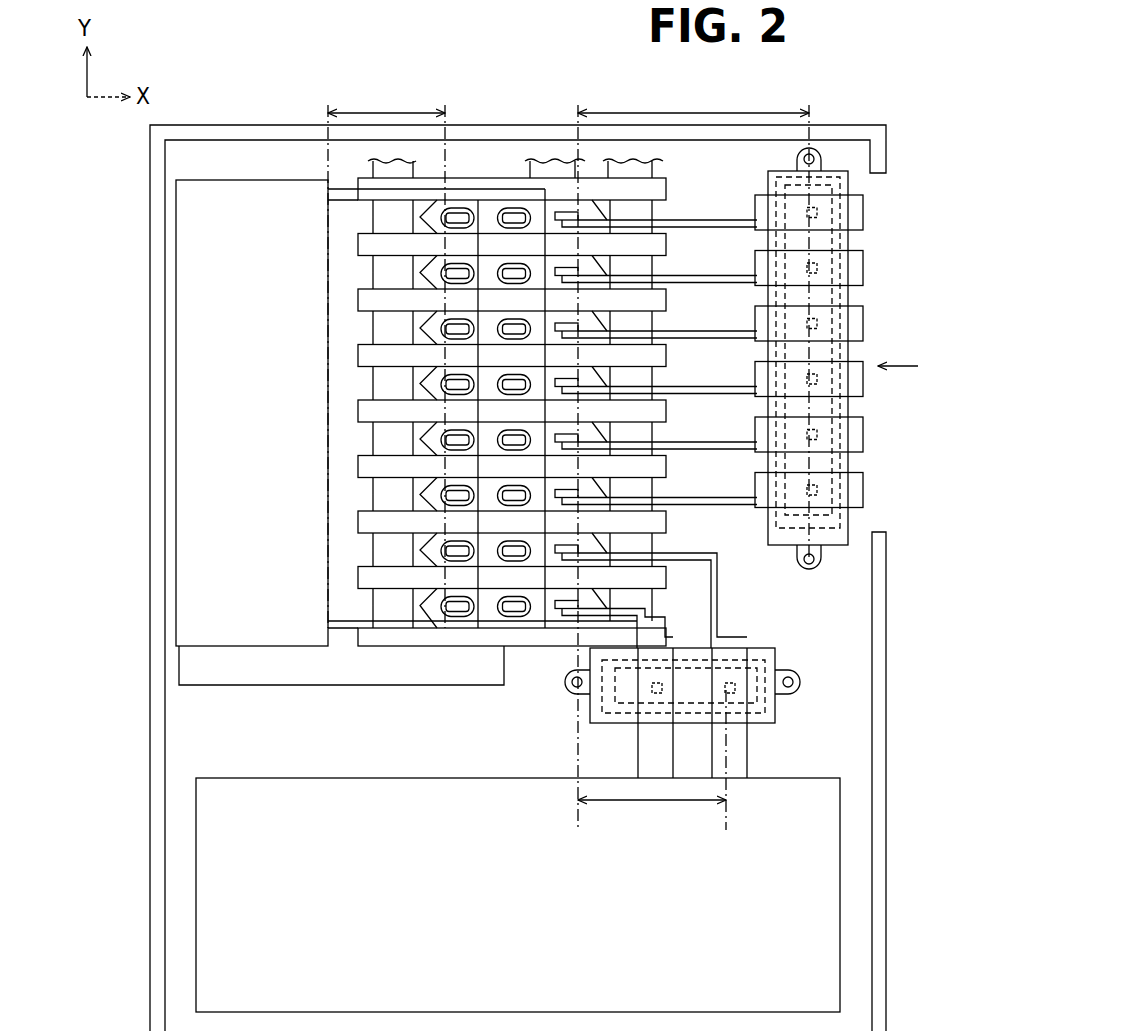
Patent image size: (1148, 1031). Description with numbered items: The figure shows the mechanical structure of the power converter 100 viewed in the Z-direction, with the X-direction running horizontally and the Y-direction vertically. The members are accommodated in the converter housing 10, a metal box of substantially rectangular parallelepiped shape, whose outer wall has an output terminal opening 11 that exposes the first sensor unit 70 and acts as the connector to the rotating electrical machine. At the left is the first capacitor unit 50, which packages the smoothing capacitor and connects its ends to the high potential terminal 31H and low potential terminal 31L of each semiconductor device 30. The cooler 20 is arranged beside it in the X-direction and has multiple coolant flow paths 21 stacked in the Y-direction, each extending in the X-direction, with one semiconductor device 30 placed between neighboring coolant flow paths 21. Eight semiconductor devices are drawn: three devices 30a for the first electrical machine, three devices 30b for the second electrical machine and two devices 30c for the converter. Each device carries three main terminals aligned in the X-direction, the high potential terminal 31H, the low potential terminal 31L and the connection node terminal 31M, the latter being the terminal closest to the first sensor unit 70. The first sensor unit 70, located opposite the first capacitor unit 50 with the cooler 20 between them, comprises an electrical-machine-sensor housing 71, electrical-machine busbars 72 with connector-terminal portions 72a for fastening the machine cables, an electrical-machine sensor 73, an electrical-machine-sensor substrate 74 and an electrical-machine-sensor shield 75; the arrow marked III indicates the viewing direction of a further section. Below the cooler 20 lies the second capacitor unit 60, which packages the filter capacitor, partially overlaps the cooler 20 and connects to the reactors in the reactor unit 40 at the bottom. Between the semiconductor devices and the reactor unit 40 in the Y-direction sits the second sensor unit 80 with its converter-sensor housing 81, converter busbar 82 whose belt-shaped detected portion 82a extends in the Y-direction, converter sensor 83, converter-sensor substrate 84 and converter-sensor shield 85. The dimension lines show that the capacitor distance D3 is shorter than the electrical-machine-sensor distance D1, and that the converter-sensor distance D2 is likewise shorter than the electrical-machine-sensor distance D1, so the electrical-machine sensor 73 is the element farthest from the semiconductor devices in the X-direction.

The power converter 100 is at (860, 100).
The converter housing 10 is at (820, 125).
The output terminal opening 11 is at (881, 175).
The cooler 20 is at (348, 647).
The coolant flow paths 21 is at (437, 647).
The semiconductor device 30 is at (95, 180).
The device for the first electrical machine 30a is at (418, 217).
The device for the second electrical machine 30b is at (418, 384).
The device for the converter 30c is at (418, 550).
The high potential terminal 31H is at (460, 208).
The low potential terminal 31L is at (514, 208).
The connection node terminal 31M is at (560, 212).
The reactor unit 40 is at (196, 834).
The first capacitor unit 50 is at (218, 190).
The second capacitor unit 60 is at (179, 664).
The first sensor unit 70 is at (878, 290).
The electrical-machine-sensor housing 71 is at (850, 171).
The electrical-machine busbar 72 is at (727, 507).
The connector-terminal portion 72a is at (862, 505).
The electrical-machine sensor 73 is at (815, 478).
The electrical-machine-sensor substrate 74 is at (832, 515).
The electrical-machine-sensor shield 75 is at (823, 527).
The second sensor unit 80 is at (565, 712).
The converter-sensor housing 81 is at (762, 722).
The converter busbar 82 is at (757, 767).
The detected portion 82a is at (763, 723).
The converter sensor 83 is at (750, 728).
The converter-sensor substrate 84 is at (773, 697).
The converter-sensor shield 85 is at (777, 650).
The electrical-machine-sensor distance D1 is at (693, 112).
The converter-sensor distance D2 is at (660, 800).
The capacitor distance D3 is at (380, 112).
The section line III is at (916, 368).